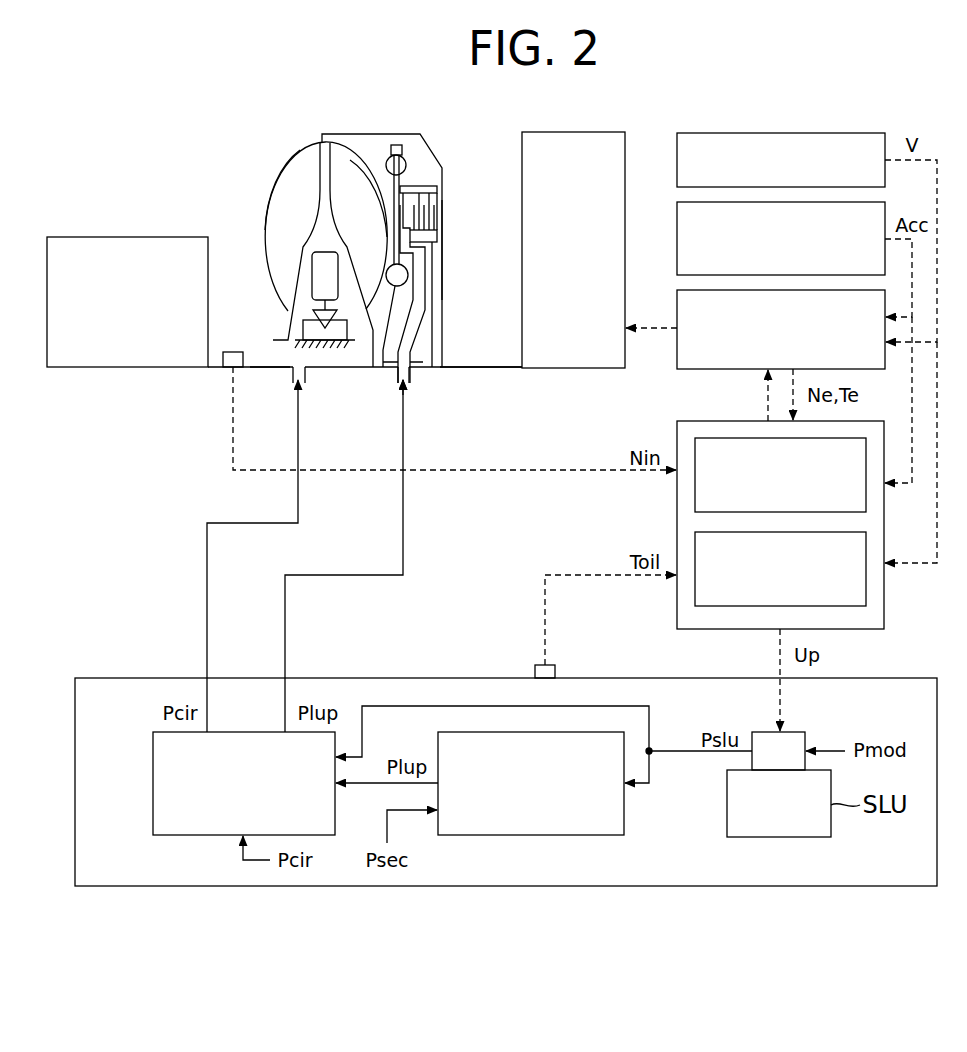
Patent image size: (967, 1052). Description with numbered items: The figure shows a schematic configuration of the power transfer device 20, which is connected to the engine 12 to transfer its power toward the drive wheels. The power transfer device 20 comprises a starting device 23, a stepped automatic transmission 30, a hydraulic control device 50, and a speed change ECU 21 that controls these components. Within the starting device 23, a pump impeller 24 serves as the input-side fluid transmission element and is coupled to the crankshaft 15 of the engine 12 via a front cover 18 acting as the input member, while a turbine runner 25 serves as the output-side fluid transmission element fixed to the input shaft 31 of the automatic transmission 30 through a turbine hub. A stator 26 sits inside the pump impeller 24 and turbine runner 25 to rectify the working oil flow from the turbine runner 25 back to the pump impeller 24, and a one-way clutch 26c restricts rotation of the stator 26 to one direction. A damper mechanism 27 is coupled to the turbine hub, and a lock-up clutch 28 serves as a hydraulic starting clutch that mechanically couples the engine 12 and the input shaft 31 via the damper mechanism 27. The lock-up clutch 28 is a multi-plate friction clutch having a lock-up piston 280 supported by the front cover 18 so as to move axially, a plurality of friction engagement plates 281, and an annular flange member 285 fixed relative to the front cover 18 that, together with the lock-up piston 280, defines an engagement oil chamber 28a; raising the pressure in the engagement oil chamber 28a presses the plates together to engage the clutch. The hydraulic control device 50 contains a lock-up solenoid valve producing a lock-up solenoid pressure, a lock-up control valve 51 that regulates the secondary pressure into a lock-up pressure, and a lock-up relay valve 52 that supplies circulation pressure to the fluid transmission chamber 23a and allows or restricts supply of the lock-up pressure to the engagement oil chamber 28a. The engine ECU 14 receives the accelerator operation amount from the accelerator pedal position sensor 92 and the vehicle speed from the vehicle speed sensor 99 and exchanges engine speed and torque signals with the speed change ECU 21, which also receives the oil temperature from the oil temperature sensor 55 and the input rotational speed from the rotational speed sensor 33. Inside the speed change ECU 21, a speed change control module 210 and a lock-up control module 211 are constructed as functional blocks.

The engine 12 is at (555, 132).
The engine ECU 14 is at (690, 370).
The crankshaft 15 is at (465, 369).
The front cover 18 is at (443, 247).
The power transfer device 20 is at (168, 142).
The speed change ECU 21 is at (884, 620).
The starting device 23 is at (270, 170).
The fluid transmission chamber 23a is at (360, 148).
The pump impeller 24 is at (270, 196).
The turbine runner 25 is at (340, 148).
The stator 26 is at (325, 257).
The one-way clutch 26c is at (300, 328).
The damper mechanism 27 is at (411, 162).
The lock-up clutch 28 is at (427, 181).
The lock-up piston 280 is at (430, 283).
The friction engagement plates 281 is at (433, 205).
The engagement oil chamber 28a is at (417, 290).
The flange member 285 is at (400, 345).
The automatic transmission 30 is at (137, 237).
The input shaft 31 is at (268, 369).
The rotational speed sensor 33 is at (233, 351).
The hydraulic control device 50 is at (112, 678).
The lock-up control valve 51 is at (590, 838).
The lock-up relay valve 52 is at (153, 778).
The oil temperature sensor 55 is at (535, 670).
The accelerator pedal position sensor 92 is at (677, 220).
The vehicle speed sensor 99 is at (838, 133).
The speed change control module 210 is at (695, 493).
The lock-up control module 211 is at (695, 583).